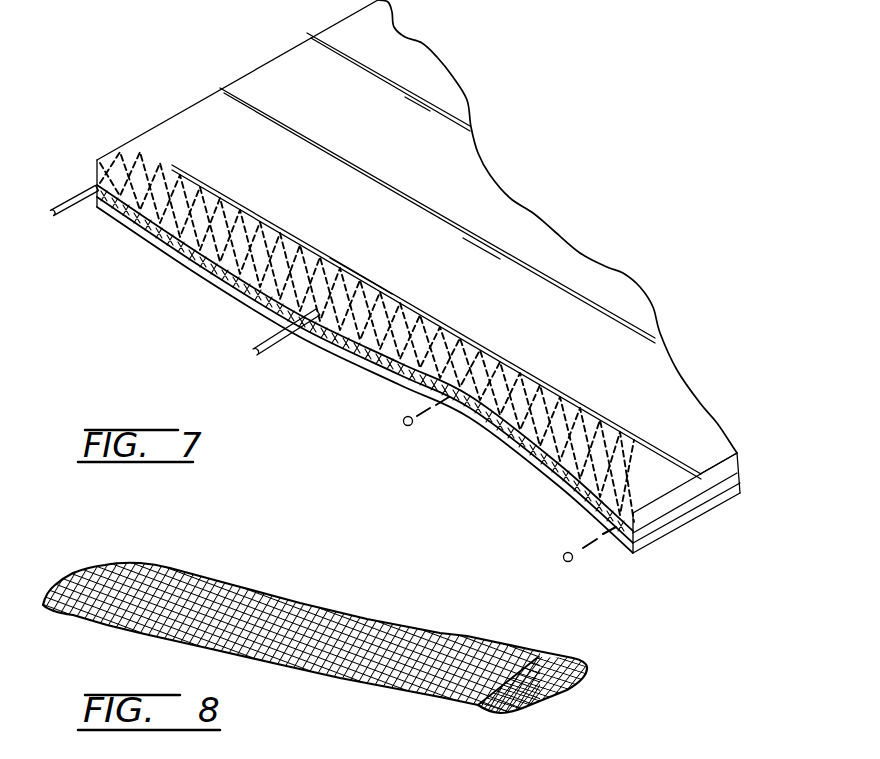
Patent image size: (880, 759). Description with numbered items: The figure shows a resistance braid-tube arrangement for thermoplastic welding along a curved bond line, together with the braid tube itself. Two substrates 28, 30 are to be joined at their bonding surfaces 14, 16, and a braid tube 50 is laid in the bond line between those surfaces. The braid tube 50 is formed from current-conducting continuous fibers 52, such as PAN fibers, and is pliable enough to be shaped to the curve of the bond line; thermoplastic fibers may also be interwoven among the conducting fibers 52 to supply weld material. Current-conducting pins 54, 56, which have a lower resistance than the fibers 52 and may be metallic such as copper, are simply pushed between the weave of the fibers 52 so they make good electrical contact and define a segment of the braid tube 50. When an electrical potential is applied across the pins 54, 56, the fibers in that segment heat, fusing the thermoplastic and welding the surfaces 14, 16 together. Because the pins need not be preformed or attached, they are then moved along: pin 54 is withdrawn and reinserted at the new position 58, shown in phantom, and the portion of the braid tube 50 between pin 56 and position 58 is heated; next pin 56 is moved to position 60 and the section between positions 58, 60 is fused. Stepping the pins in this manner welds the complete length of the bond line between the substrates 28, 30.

In FIG. 7, the surface 14 is at (655, 515).
In FIG. 7, the surface 16 is at (650, 540).
In FIG. 7, the substrate 28 is at (732, 462).
In FIG. 7, the substrate 30 is at (724, 497).
In FIG. 7, the braid tube 50 is at (180, 204).
In FIG. 8, the braid tube 50 is at (322, 600).
In FIG. 8, the continuous fibers 52 is at (588, 666).
In FIG. 7, the current conducting pin 54 is at (68, 201).
In FIG. 7, the current conducting pin 56 is at (254, 351).
In FIG. 7, the new position 58 is at (411, 426).
In FIG. 7, the position 60 is at (571, 562).